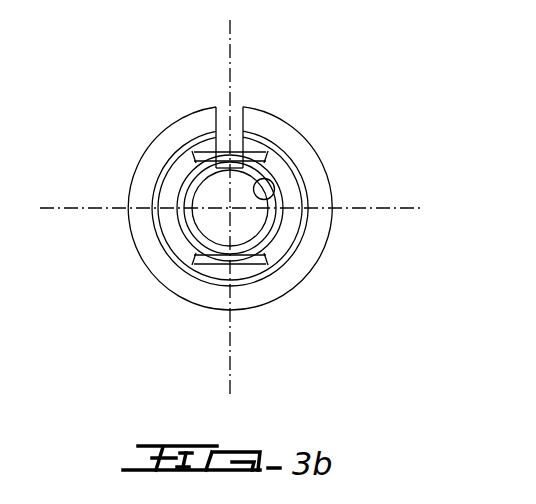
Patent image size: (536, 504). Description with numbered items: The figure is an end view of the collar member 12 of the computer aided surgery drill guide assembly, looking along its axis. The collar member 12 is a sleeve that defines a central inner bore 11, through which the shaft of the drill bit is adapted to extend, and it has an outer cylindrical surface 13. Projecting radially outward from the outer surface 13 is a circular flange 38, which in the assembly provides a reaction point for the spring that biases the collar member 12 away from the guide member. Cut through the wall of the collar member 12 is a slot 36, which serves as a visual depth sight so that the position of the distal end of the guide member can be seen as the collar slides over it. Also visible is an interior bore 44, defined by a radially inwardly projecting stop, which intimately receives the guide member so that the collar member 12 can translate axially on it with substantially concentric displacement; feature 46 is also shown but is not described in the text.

The inner bore 11 is at (183, 225).
The collar member 12 is at (306, 126).
The outer cylindrical surface 13 is at (203, 283).
The slot 36 is at (241, 117).
The circular flange 38 is at (317, 268).
The interior bore 44 is at (278, 200).
The insert 46 is at (268, 287).